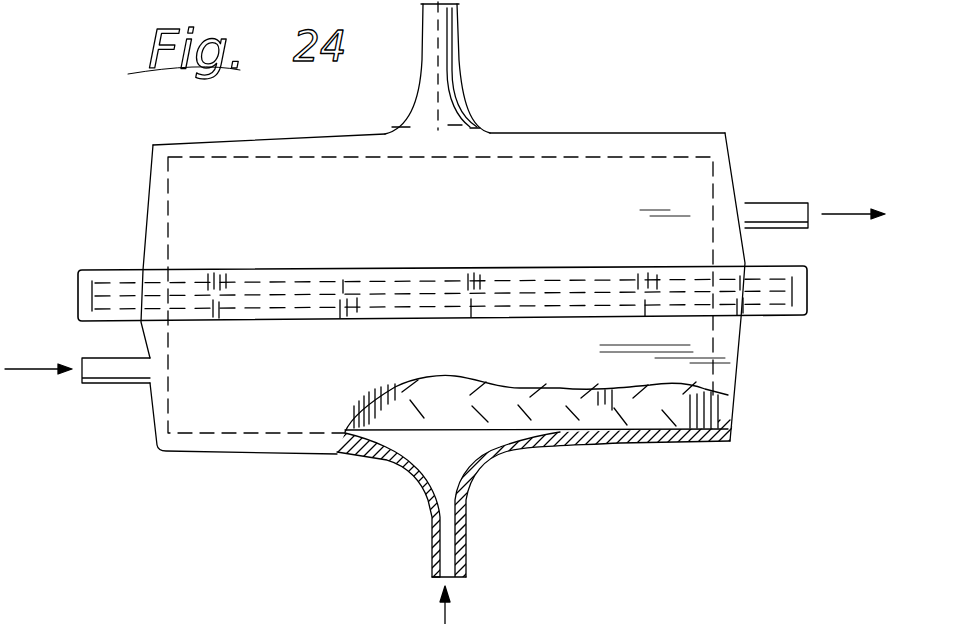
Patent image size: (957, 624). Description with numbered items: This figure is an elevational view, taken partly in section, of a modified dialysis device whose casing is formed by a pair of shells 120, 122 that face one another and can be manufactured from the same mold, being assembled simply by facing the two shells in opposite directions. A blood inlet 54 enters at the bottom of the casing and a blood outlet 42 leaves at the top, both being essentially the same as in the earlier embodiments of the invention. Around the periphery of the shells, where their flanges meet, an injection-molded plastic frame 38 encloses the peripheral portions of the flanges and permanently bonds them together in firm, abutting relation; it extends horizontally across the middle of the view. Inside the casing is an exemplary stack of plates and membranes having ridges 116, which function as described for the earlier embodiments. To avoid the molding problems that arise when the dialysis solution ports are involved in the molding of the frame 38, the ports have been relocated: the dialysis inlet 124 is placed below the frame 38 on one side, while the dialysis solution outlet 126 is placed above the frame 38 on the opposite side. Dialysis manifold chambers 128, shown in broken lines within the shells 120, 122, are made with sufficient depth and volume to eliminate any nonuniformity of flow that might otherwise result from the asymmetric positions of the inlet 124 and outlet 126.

The blood outlet 42 is at (455, 41).
The frame 38 is at (787, 296).
The dialysis solution outlet 126 is at (778, 203).
The dialysis manifold chambers 128 is at (147, 231).
The shell 122 is at (418, 251).
The shell 120 is at (312, 406).
The dialysis inlet 124 is at (107, 383).
The ridges 116 is at (618, 402).
The blood inlet 54 is at (467, 540).